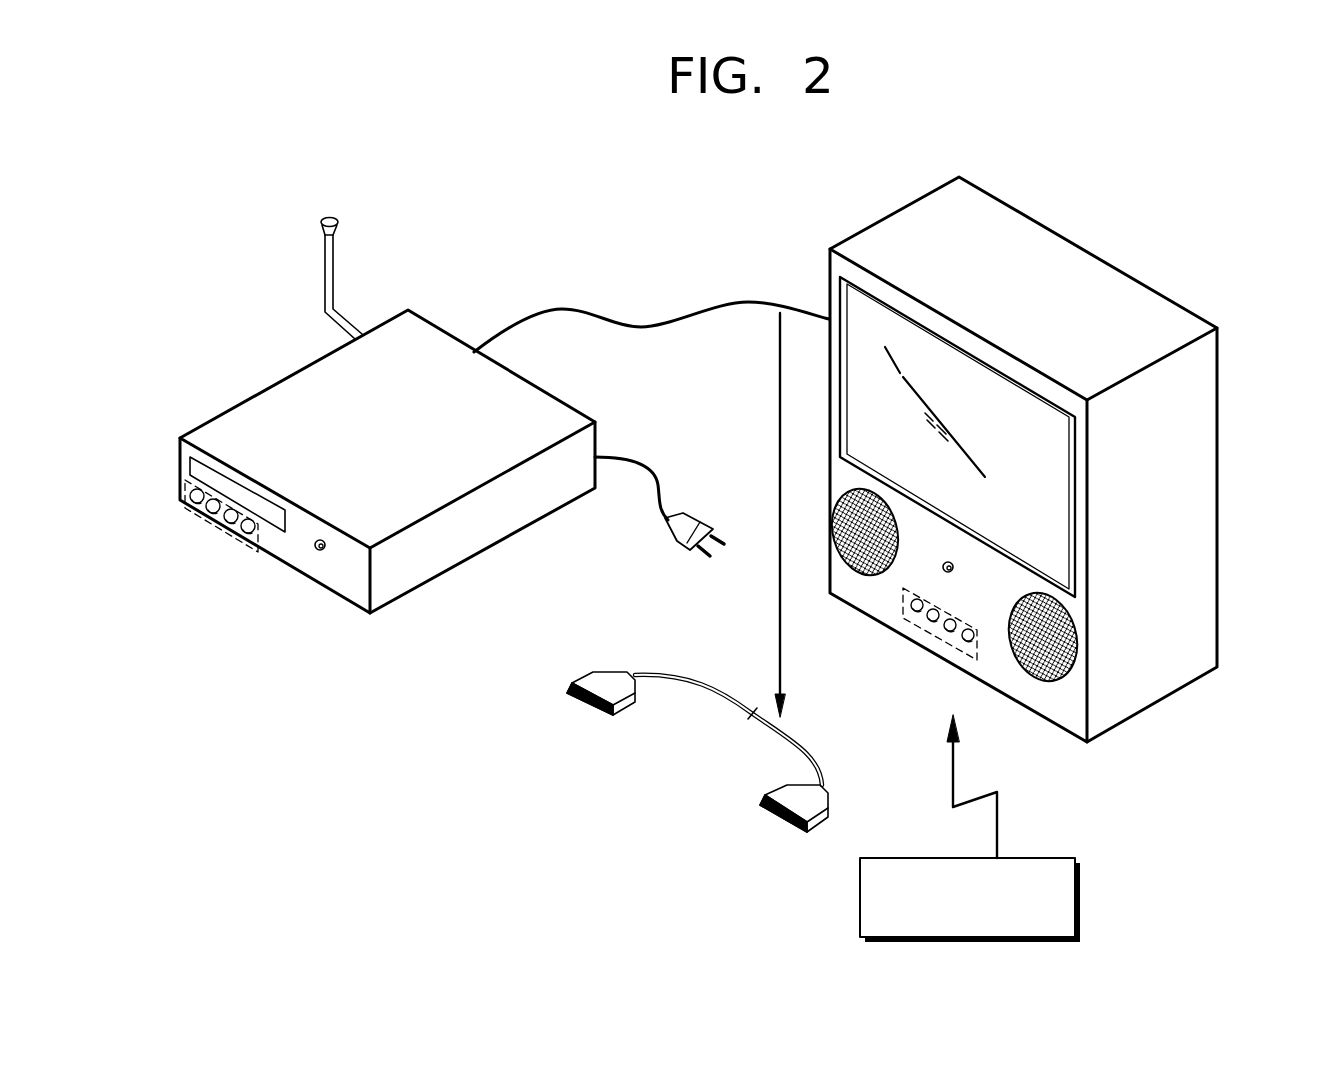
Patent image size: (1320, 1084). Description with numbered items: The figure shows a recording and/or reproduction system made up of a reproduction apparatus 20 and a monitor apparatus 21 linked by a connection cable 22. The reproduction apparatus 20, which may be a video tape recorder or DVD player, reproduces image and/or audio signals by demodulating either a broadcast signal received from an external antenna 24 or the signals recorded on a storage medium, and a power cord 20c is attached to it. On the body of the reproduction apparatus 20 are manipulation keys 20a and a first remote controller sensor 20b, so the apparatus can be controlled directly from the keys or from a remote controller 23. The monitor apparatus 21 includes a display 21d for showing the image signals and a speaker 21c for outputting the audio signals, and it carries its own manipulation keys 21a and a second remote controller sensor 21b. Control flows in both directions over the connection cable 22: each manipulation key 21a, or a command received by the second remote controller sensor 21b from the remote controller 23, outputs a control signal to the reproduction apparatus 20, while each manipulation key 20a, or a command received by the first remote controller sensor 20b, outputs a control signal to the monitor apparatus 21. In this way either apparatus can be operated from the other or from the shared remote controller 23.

The reproduction apparatus 20 is at (440, 332).
The manipulation keys 20a is at (223, 534).
The first remote controller sensor 20b is at (317, 551).
The power cord 20c is at (695, 524).
The monitor apparatus 21 is at (1062, 274).
The manipulation keys 21a is at (925, 637).
The second remote controller sensor 21b is at (943, 571).
The speaker 21c is at (852, 562).
The display 21d is at (867, 315).
The connection cable 22 is at (587, 720).
The remote controller 23 is at (908, 858).
The external antenna 24 is at (338, 235).